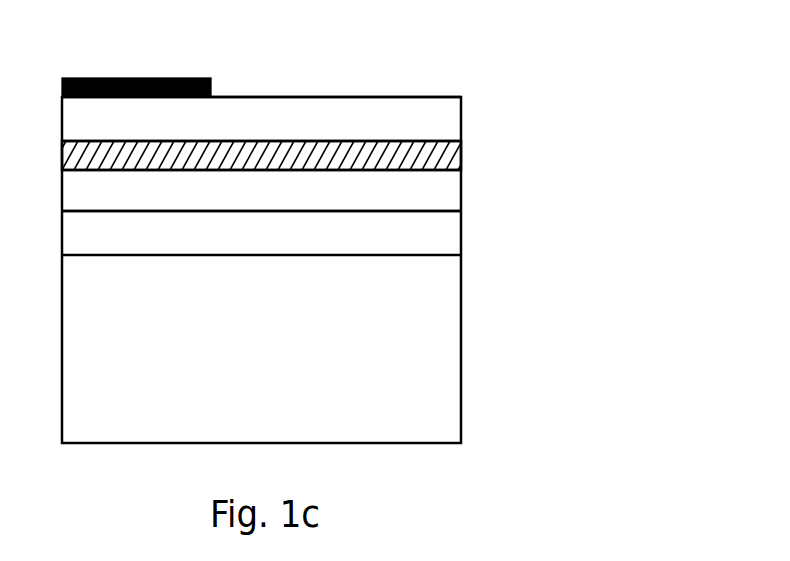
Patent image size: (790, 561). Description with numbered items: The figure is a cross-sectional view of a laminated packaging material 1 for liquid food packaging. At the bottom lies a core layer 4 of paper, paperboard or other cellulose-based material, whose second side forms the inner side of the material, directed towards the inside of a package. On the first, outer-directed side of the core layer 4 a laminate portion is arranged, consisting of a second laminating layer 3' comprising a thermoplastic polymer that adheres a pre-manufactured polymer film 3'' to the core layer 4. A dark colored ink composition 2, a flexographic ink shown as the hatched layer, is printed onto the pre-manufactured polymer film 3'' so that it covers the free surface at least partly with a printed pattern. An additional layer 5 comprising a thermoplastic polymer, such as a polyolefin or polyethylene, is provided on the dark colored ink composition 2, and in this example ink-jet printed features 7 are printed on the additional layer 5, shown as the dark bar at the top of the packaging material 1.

The laminated packaging material 1 is at (604, 55).
The dark colored ink composition 2 is at (461, 155).
The second laminating layer 3' is at (310, 226).
The pre-manufactured polymer film 3'' is at (312, 183).
The core layer 4 is at (461, 355).
The additional layer 5 is at (461, 118).
The ink-jet printed features 7 is at (167, 78).